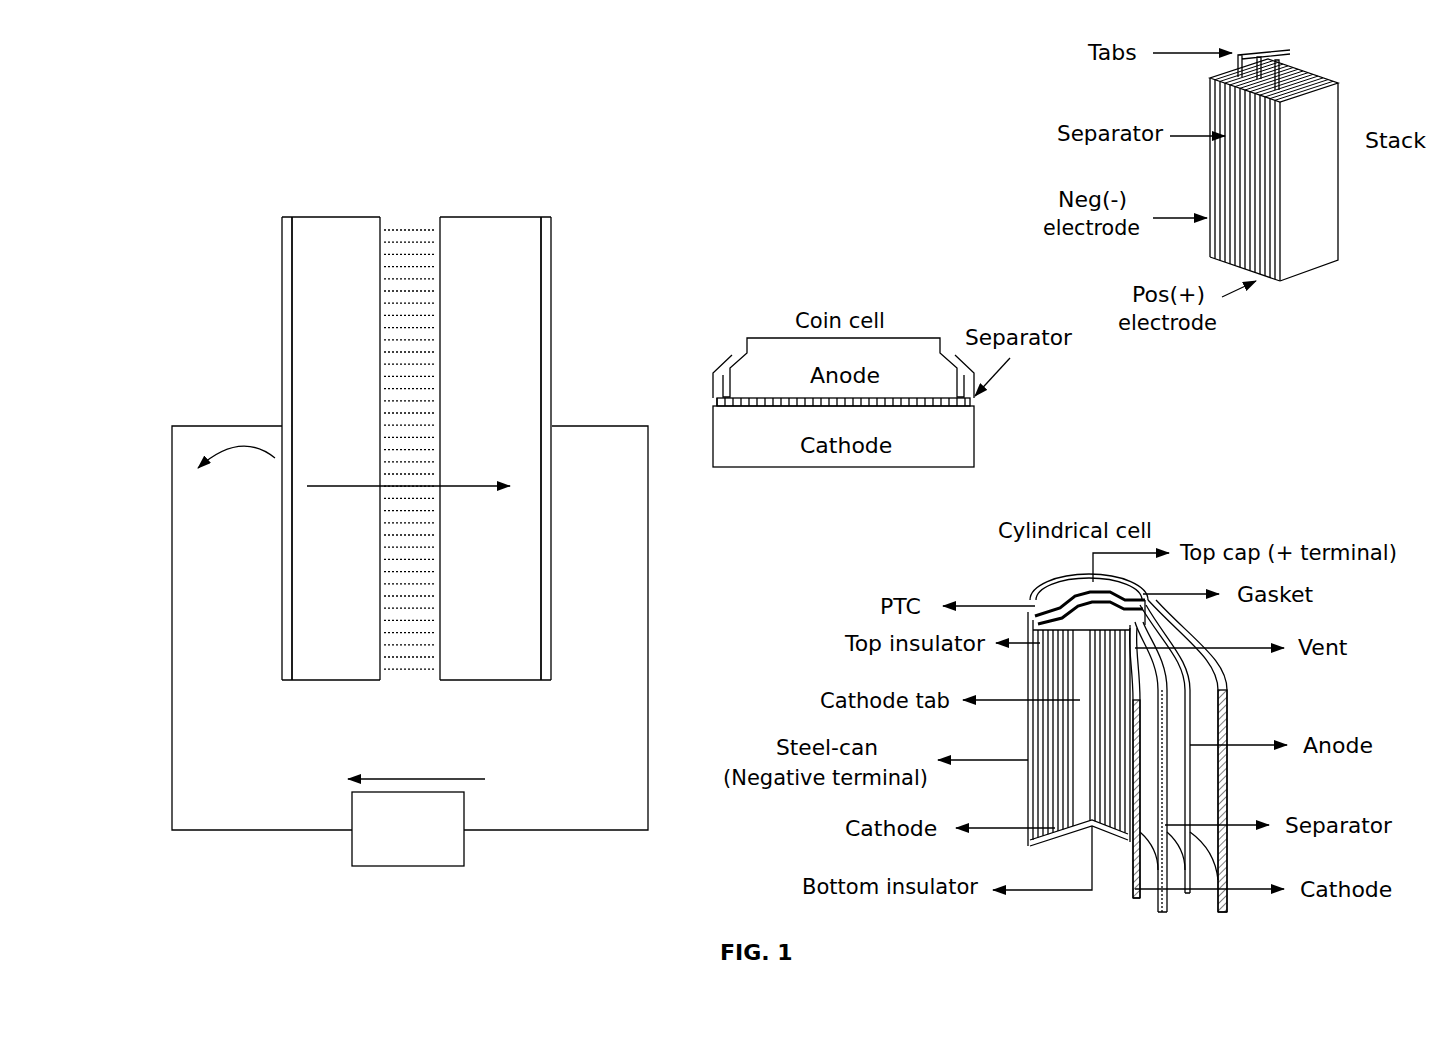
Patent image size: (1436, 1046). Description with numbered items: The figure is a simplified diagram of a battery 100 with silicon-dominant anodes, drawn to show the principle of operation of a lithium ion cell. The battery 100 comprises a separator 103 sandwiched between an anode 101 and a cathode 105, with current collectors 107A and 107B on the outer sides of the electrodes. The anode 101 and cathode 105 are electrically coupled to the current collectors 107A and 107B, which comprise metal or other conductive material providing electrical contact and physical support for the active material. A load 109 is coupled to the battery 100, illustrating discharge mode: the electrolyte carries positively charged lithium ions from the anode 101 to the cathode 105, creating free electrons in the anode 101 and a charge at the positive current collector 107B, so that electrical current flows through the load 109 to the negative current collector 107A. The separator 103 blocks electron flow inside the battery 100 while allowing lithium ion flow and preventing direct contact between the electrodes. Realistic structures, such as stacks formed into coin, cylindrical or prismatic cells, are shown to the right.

The battery 100 is at (238, 162).
The anode 101 is at (362, 387).
The separator 103 is at (412, 217).
The cathode 105 is at (515, 385).
The negative current collector 107A is at (282, 250).
The positive current collector 107B is at (552, 265).
The load 109 is at (430, 852).